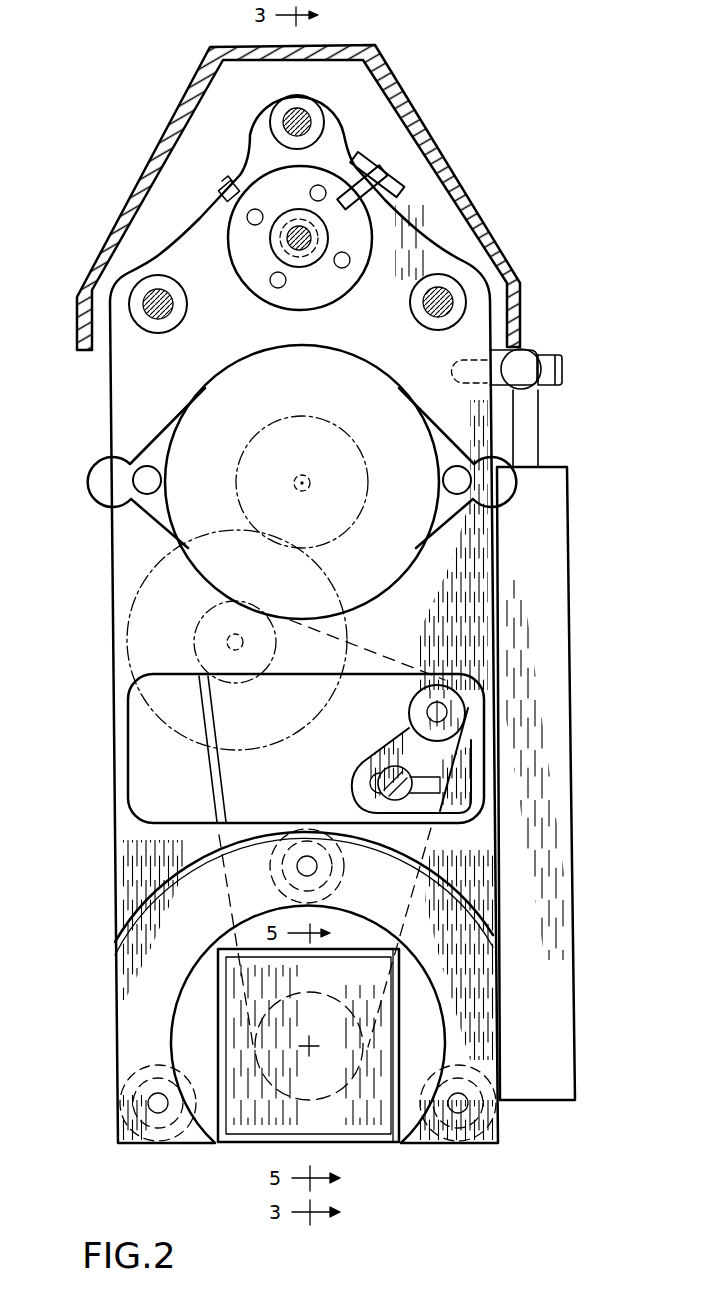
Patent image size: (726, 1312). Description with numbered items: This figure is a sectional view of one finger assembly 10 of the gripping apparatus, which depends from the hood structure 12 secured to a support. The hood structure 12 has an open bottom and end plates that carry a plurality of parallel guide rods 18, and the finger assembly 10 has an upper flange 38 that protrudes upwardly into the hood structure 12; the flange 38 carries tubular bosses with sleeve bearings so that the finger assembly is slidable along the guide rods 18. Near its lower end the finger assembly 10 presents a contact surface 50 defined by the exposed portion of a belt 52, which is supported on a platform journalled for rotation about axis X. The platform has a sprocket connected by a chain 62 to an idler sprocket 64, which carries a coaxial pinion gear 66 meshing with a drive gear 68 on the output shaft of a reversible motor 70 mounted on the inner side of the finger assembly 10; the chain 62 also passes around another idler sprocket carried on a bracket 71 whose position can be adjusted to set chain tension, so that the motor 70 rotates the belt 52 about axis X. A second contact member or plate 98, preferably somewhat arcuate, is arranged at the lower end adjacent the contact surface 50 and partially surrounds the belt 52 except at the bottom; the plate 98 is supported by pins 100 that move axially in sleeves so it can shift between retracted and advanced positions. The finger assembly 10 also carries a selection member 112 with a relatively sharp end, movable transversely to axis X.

The finger assembly 10 is at (618, 438).
The hood structure 12 is at (490, 208).
The guide rods 18 is at (283, 115).
The upper flange 38 is at (340, 137).
The contact surface 50 is at (307, 1038).
The belt 52 is at (370, 1124).
The chain 62 is at (221, 778).
The idler sprocket 64 is at (277, 652).
The pinion gear 66 is at (321, 575).
The drive gear 68 is at (332, 425).
The reversible motor 70 is at (385, 390).
The bracket 71 is at (405, 735).
The plate 98 is at (480, 932).
The pins 100 is at (306, 860).
The selection member 112 is at (574, 806).